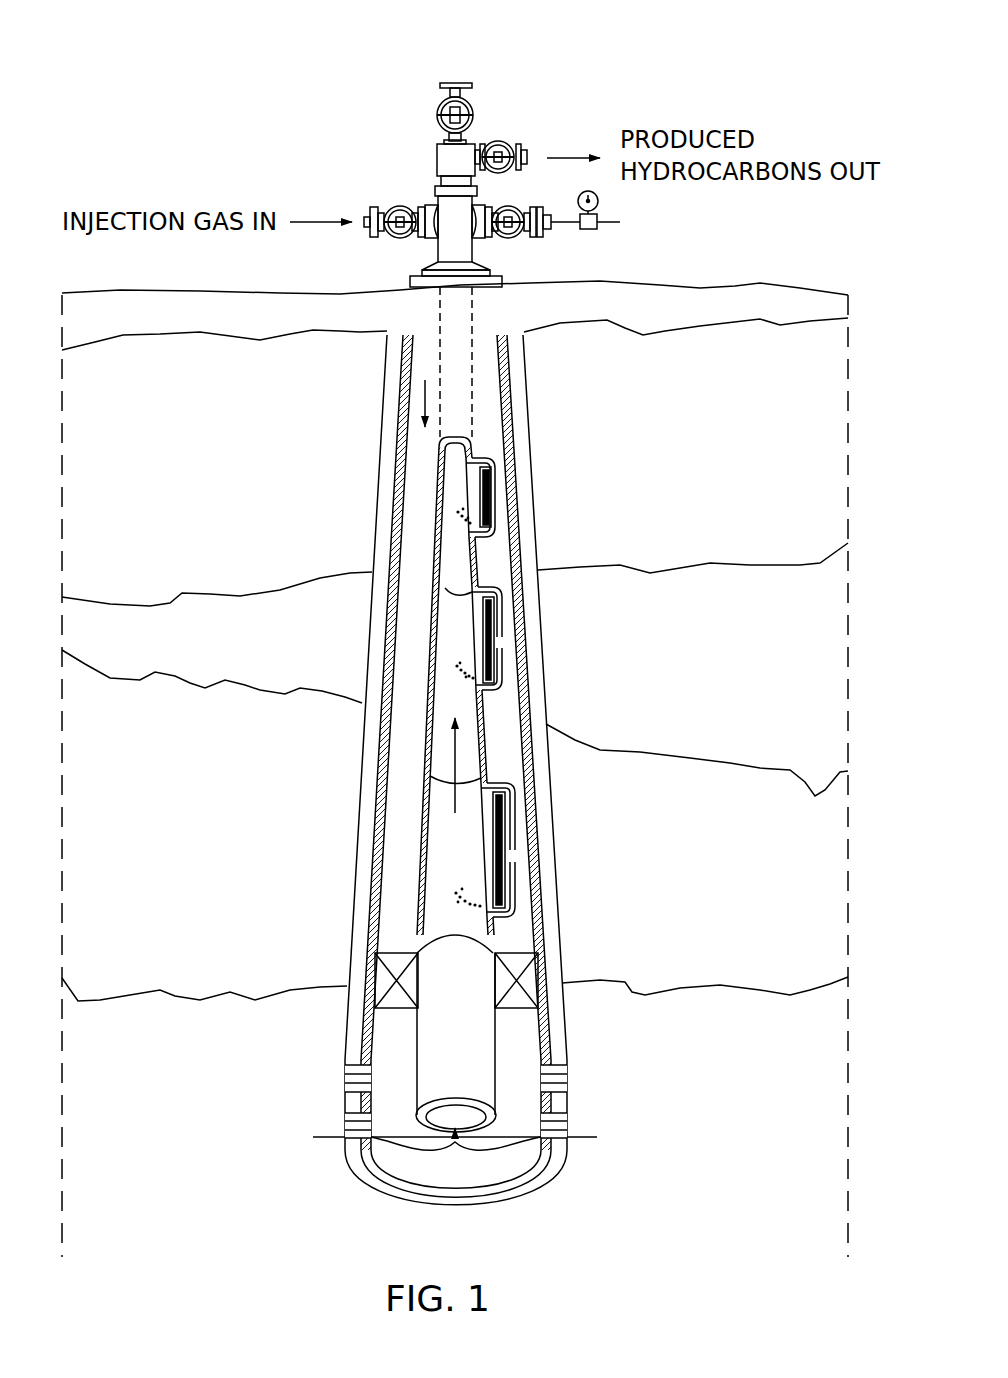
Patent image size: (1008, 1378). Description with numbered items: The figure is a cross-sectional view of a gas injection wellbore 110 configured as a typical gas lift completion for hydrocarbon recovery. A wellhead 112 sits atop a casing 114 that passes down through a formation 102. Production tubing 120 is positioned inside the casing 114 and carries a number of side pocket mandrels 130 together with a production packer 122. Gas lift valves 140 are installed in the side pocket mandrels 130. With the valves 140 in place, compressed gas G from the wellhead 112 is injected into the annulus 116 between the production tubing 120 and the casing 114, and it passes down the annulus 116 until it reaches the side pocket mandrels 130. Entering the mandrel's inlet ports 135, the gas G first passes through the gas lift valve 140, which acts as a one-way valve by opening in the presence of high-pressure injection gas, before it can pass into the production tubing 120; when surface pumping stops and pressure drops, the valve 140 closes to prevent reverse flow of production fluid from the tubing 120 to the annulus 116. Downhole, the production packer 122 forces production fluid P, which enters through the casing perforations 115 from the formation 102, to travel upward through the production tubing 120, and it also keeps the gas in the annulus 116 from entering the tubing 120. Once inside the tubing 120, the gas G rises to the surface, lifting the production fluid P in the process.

The formation 102 is at (735, 1172).
The gas lift well system 110 is at (700, 91).
The wellhead 112 is at (437, 158).
The casing 114 is at (393, 640).
The casing perforations 115 is at (345, 1088).
The annulus 116 is at (422, 535).
The production tubing 120 is at (452, 412).
The production packer 122 is at (513, 998).
The side pocket mandrel 130 is at (502, 630).
The inlet port 135 is at (512, 642).
The gas lift valve 140 is at (500, 840).
The compressed gas G is at (424, 404).
The production fluid P is at (453, 737).